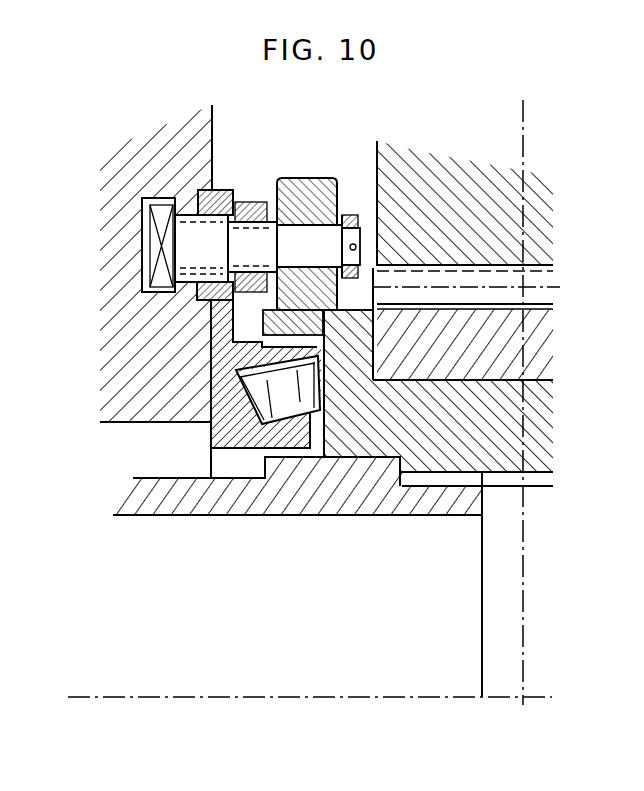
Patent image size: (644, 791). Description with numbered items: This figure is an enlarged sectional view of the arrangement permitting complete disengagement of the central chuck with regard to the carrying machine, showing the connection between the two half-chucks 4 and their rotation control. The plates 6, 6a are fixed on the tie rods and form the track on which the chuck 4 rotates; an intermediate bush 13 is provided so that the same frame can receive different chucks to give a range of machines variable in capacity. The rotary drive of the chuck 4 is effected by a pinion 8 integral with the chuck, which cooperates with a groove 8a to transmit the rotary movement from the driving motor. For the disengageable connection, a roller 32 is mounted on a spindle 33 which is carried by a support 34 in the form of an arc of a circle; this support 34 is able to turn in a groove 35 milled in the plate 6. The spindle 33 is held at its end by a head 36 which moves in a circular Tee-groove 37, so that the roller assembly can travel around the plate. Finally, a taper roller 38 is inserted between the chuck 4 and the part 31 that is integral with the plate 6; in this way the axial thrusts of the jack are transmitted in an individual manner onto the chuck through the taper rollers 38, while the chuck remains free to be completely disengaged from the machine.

The chuck 4 is at (280, 497).
The plate 6 is at (197, 129).
The plate 6a is at (197, 129).
The pinion 8 is at (493, 277).
The groove 8a is at (440, 484).
The intermediate bush 13 is at (498, 425).
The part integral with plate 31 is at (238, 438).
The roller 32 is at (315, 190).
The spindle 33 is at (316, 232).
The support 34 is at (221, 192).
The groove 35 is at (230, 304).
The head 36 is at (152, 242).
The Tee-groove 37 is at (157, 303).
The taper roller 38 is at (208, 428).